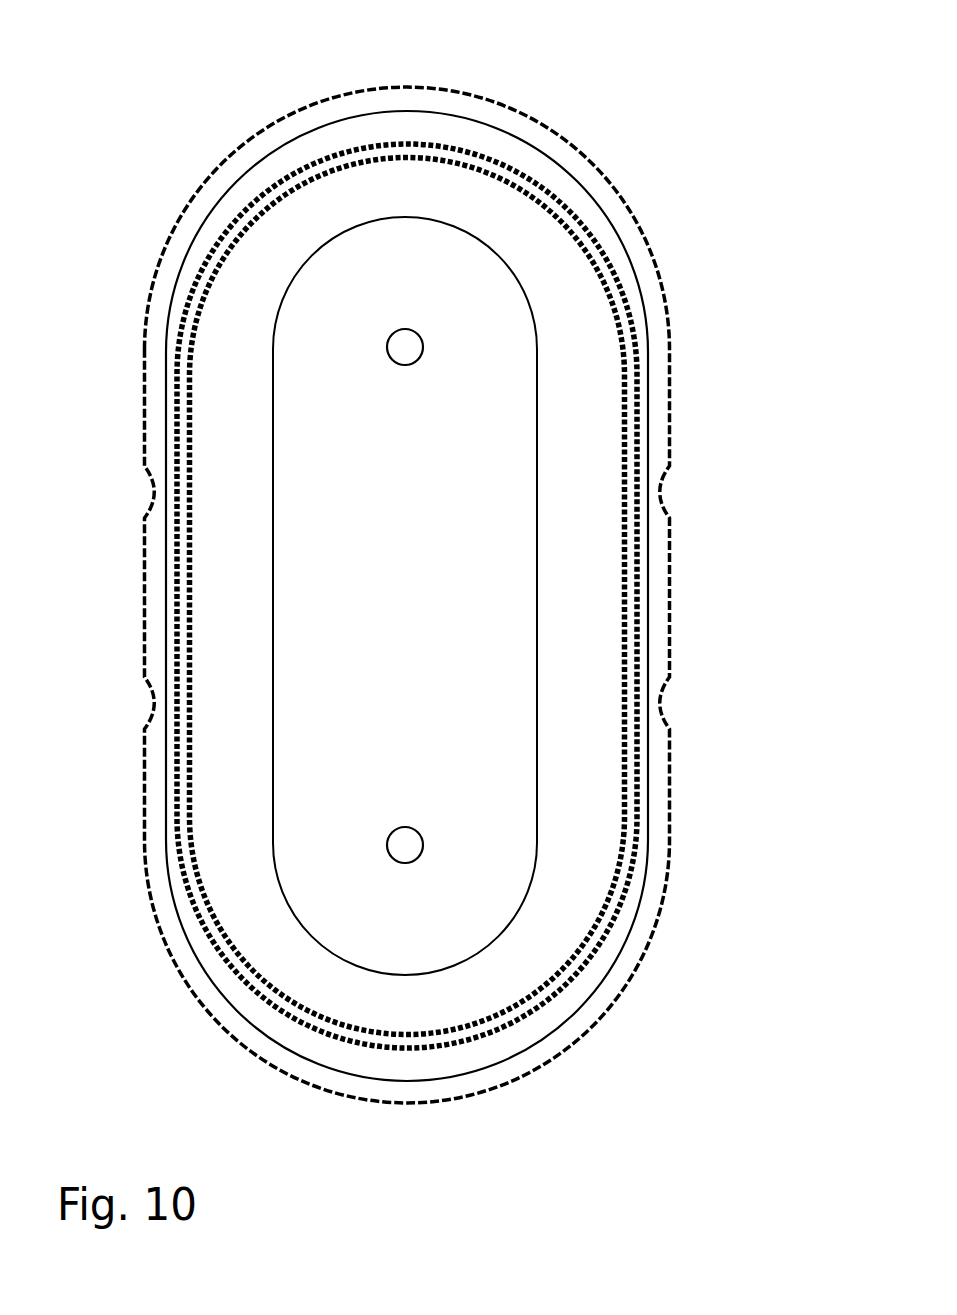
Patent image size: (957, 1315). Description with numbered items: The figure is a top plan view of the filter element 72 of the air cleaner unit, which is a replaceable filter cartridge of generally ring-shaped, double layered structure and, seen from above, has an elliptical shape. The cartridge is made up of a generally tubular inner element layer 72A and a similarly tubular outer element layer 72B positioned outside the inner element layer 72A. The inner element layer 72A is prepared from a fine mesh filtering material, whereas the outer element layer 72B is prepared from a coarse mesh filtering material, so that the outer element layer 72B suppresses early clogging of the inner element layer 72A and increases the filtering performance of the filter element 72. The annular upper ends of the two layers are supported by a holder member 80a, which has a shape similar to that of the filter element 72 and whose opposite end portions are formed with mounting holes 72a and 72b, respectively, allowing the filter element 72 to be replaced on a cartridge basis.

The filter element 72 is at (706, 444).
The inner element layer 72A is at (460, 190).
The outer element layer 72B is at (580, 172).
The mounting hole 72a is at (413, 342).
The mounting hole 72b is at (410, 843).
The holder member 80a is at (505, 648).